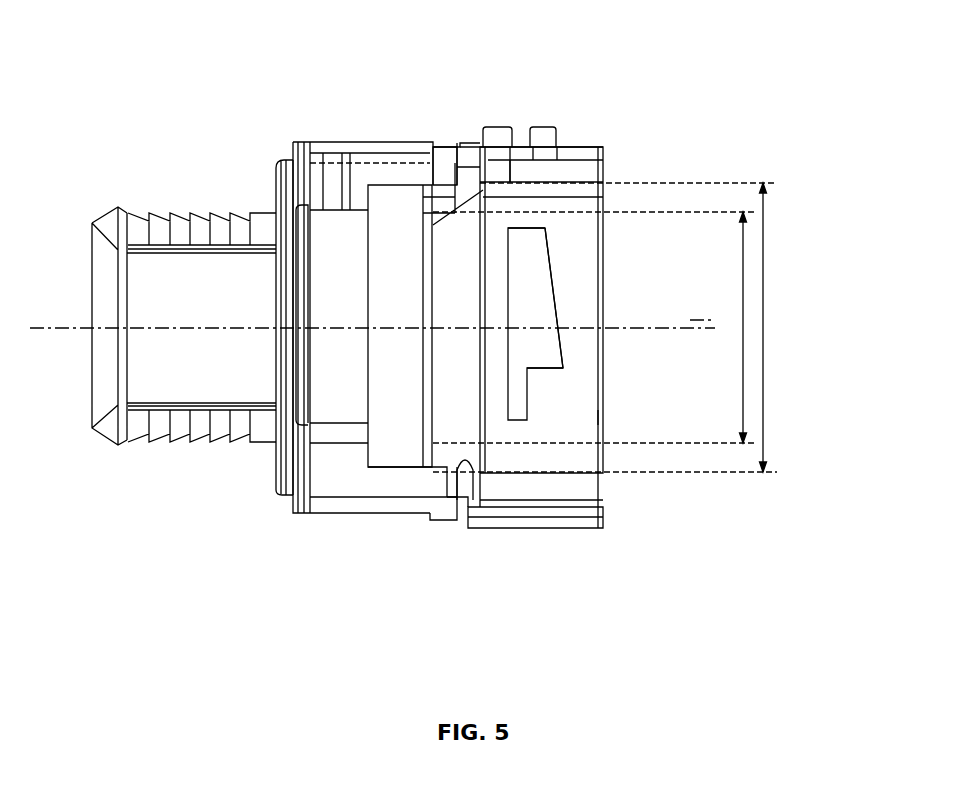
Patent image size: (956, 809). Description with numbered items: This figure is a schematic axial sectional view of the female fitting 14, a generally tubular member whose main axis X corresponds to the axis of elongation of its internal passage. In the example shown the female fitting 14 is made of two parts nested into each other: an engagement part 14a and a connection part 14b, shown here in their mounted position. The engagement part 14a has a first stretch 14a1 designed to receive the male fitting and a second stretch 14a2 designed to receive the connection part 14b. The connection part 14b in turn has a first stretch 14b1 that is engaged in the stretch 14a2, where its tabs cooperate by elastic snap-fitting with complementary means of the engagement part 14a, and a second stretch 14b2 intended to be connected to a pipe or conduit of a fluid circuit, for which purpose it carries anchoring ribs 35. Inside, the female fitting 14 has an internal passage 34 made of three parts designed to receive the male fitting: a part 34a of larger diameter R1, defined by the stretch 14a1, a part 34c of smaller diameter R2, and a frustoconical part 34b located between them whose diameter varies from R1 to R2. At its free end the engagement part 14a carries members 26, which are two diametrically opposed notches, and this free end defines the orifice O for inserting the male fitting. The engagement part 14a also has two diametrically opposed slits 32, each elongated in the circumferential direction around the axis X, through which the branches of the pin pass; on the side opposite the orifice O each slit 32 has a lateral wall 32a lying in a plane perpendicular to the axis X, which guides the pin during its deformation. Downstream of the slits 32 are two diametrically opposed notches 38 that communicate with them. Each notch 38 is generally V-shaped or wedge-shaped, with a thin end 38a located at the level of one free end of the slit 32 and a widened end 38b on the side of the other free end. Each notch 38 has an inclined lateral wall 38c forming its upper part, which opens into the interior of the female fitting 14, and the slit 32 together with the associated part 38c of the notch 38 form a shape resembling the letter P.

The female fitting 14 is at (640, 120).
The engagement part 14a is at (575, 138).
The first stretch of the engagement part 14a1 is at (592, 157).
The second stretch of the engagement part 14a2 is at (442, 142).
The connection part 14b is at (212, 452).
The first stretch of the connection part 14b1 is at (312, 140).
The second stretch of the connection part 14b2 is at (188, 215).
The members (notches) 26 is at (618, 158).
The slit 32 is at (518, 425).
The lateral wall of the slit 32a is at (518, 345).
The internal passage 34 is at (590, 451).
The larger-diameter part of the internal passage 34a is at (575, 475).
The frustoconical part of the internal passage 34b is at (463, 512).
The smaller-diameter part of the internal passage 34c is at (303, 480).
The anchoring ribs 35 is at (145, 215).
The notch 38 is at (545, 316).
The thin end of the notch 38a is at (545, 237).
The widened end of the notch 38b is at (562, 368).
The lateral wall of the notch 38c is at (563, 353).
The orifice O is at (603, 418).
The main axis X is at (675, 328).
The larger diameter R1 is at (763, 298).
The smaller diameter R2 is at (743, 343).